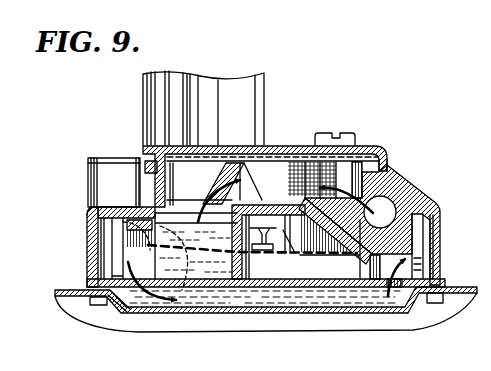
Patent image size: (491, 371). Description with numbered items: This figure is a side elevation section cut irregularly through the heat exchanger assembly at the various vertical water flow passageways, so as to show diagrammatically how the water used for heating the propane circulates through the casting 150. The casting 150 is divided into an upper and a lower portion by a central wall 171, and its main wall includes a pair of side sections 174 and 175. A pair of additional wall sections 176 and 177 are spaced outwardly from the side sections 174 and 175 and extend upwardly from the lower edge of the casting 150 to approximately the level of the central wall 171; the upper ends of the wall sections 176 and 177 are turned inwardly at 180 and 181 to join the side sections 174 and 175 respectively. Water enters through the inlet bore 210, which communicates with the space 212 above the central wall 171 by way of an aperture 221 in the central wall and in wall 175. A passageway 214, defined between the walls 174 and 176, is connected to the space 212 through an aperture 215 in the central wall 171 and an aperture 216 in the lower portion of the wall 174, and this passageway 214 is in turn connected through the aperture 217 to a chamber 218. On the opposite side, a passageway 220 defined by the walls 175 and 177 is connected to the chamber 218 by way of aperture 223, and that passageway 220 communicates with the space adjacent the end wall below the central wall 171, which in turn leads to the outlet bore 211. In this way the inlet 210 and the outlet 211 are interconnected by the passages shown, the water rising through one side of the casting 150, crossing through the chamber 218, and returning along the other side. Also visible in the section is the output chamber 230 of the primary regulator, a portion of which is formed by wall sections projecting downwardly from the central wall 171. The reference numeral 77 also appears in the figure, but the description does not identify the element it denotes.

The chamber 77 is at (197, 267).
The casting 150 is at (98, 214).
The central wall 171 is at (273, 205).
The side section 174 is at (148, 161).
The side section 175 is at (382, 148).
The wall section 176 is at (88, 253).
The wall section 177 is at (434, 214).
The inwardly turned upper end 180 is at (90, 199).
The inwardly turned upper end 181 is at (424, 214).
The water inlet bore 210 is at (394, 206).
The water outlet bore 211 is at (123, 235).
The space 212 is at (333, 173).
The passageway 214 is at (107, 266).
The aperture 215 is at (181, 210).
The aperture 216 is at (137, 190).
The aperture 217 is at (110, 298).
The chamber 218 is at (270, 301).
The passageway 220 is at (436, 262).
The aperture 221 is at (388, 168).
The aperture 223 is at (413, 285).
The output chamber 230 is at (293, 268).